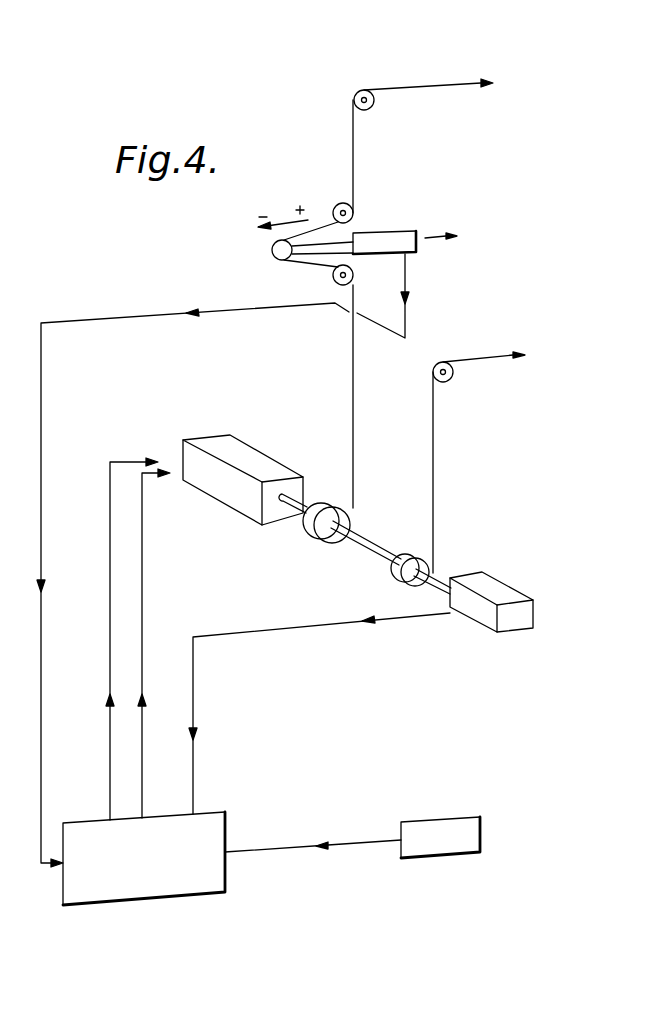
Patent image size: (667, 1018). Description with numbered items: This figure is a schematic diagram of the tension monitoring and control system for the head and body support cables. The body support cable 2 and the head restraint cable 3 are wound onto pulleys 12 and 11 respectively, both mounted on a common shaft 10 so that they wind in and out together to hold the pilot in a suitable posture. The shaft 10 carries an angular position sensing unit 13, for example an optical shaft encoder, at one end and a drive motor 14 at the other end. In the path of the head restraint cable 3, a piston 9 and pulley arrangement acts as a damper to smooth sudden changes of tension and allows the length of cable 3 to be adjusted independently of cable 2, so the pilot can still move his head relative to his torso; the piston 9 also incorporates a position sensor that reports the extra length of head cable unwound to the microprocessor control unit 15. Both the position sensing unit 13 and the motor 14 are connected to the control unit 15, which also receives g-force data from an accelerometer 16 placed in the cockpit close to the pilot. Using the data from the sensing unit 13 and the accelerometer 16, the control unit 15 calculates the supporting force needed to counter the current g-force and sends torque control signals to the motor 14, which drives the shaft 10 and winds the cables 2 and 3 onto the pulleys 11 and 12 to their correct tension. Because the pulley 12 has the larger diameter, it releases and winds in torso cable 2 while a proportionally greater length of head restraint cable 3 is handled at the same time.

The body support cable 2 is at (433, 483).
The head restraint cable 3 is at (447, 83).
The piston 9 is at (398, 231).
The common shaft 10 is at (365, 555).
The pulley 11 is at (323, 502).
The pulley 12 is at (413, 557).
The angular position sensing unit 13 is at (533, 613).
The drive motor 14 is at (212, 433).
The microprocessor control unit 15 is at (128, 898).
The accelerometer 16 is at (452, 858).